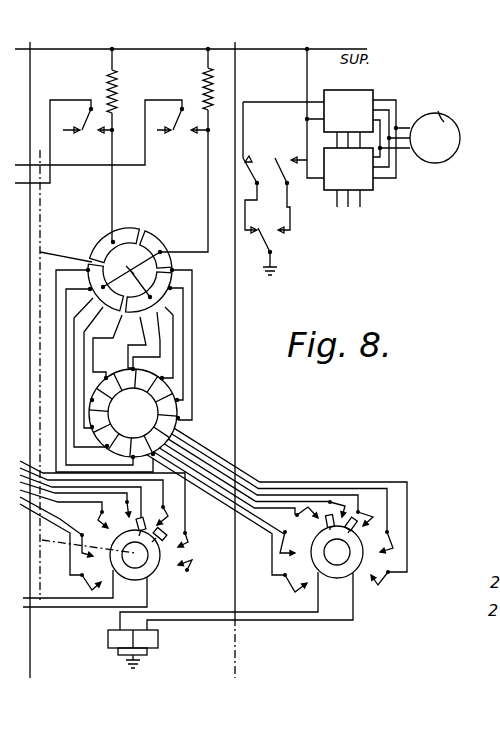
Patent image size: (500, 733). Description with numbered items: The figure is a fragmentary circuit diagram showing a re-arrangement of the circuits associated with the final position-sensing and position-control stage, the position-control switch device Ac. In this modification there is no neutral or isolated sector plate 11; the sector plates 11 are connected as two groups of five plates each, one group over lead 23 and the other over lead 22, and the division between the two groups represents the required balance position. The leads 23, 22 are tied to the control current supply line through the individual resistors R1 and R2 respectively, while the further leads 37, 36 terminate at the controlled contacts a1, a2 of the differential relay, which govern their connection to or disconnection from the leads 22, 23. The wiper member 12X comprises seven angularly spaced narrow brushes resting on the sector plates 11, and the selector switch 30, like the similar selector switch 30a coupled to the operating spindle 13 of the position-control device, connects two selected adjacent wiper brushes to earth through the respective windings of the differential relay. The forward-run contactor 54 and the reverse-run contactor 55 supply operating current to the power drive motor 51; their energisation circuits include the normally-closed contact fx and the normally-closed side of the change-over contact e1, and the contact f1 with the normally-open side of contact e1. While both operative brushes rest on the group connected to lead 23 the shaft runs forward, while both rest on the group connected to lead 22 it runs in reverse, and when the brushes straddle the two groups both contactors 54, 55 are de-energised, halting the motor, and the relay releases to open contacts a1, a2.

The sector plates 11 is at (124, 375).
The wiper member 12X is at (213, 452).
The operating spindle 13 is at (52, 545).
The lead 22 is at (208, 196).
The lead 23 is at (112, 196).
The multi-point selector switch 30 is at (364, 586).
The multi-point selector switch 30a is at (162, 590).
The lead 36 is at (92, 132).
The lead 37 is at (47, 154).
The power drive motor 51 is at (460, 135).
The forward-run contactor 54 is at (345, 90).
The reverse-run contactor 55 is at (370, 190).
The resistor R1 is at (125, 81).
The resistor R2 is at (194, 79).
The controlled contact a1 is at (88, 133).
The controlled contact a2 is at (183, 133).
The normally-closed contact fx is at (252, 158).
The contact f1 is at (285, 158).
The change-over contact e1 is at (271, 229).
The position-control switch device Ac is at (106, 235).